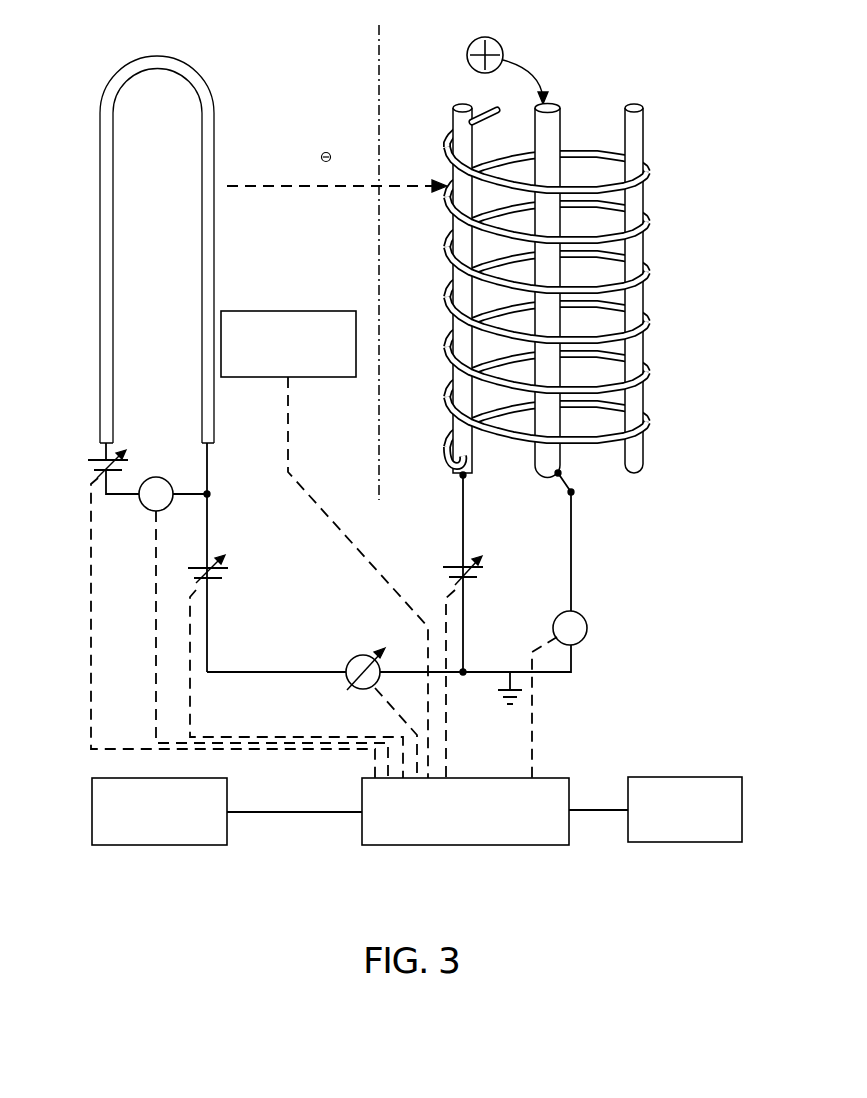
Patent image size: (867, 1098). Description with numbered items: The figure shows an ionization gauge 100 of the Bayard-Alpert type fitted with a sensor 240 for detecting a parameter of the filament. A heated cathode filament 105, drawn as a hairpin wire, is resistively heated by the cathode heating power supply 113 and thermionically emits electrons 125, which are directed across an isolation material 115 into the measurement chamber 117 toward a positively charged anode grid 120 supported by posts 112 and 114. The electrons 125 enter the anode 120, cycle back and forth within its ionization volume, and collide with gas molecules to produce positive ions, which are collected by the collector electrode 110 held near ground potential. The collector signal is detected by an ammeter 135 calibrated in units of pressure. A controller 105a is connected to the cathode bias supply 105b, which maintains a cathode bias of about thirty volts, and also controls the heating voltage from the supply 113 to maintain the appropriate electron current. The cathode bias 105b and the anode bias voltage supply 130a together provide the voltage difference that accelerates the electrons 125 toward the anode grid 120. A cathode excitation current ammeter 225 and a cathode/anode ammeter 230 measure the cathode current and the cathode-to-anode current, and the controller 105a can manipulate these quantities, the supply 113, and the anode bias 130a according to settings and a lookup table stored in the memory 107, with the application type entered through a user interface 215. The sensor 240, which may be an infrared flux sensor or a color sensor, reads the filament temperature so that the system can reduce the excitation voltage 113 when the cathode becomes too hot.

The ionization gauge 100 is at (664, 44).
The cathode filament 105 is at (99, 235).
The controller 105a is at (378, 846).
The cathode bias supply 105b is at (205, 557).
The memory 107 is at (712, 777).
The collector electrode 110 is at (548, 104).
The post 112 is at (462, 104).
The cathode heating power supply 113 is at (96, 455).
The post 114 is at (634, 104).
The isolation material 115 is at (379, 405).
The measurement chamber 117 is at (415, 55).
The anode grid 120 is at (536, 278).
The electrons 125 is at (347, 196).
The anode bias voltage supply 130a is at (455, 560).
The ammeter 135 is at (583, 615).
The user interface 215 is at (104, 778).
The cathode excitation current ammeter 225 is at (142, 503).
The cathode/anode ammeter 230 is at (358, 690).
The sensor 240 is at (316, 311).